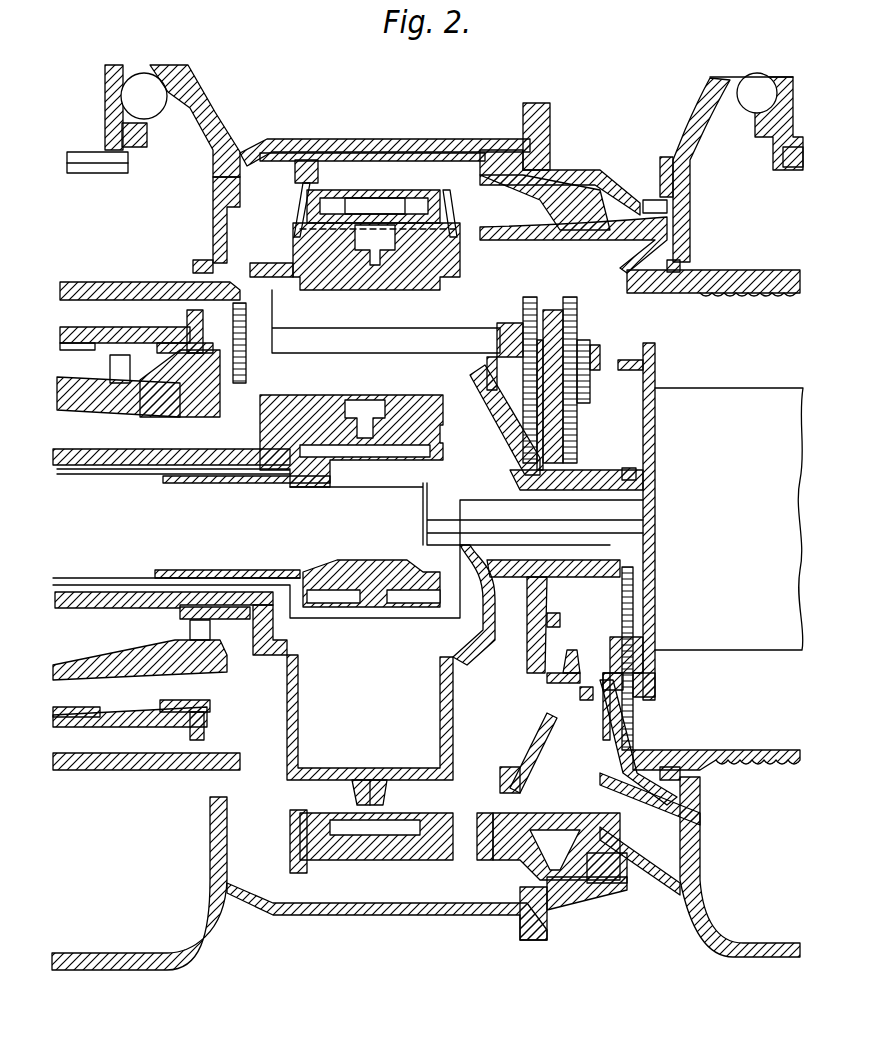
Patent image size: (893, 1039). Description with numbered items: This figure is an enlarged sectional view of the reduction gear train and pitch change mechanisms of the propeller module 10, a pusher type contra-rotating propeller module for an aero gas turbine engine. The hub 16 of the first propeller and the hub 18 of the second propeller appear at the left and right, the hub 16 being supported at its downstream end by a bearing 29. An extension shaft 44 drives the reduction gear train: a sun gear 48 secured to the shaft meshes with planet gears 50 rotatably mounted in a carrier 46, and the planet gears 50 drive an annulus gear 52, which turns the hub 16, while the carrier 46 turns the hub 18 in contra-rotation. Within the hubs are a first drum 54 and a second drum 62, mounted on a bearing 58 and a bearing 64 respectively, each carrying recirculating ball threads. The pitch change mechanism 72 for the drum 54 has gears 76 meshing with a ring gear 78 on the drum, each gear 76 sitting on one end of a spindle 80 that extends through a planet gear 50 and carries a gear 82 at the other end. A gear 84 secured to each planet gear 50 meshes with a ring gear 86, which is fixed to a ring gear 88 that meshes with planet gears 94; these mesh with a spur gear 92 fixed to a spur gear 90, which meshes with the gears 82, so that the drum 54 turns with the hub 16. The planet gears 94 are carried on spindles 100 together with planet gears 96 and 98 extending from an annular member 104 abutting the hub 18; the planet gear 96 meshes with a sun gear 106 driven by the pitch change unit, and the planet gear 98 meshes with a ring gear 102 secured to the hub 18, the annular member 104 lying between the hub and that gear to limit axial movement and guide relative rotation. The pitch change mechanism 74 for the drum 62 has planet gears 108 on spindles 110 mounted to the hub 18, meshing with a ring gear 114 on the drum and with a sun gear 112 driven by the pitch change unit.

The propeller module 10 is at (740, 468).
The hub 16 is at (203, 121).
The hub 18 is at (700, 96).
The bearing 29 is at (187, 362).
The extension shaft 44 is at (205, 482).
The carrier 46 is at (95, 453).
The sun gear 48 is at (348, 600).
The planet gears 50 is at (327, 440).
The annulus gear 52 is at (365, 212).
The first drum 54 is at (100, 282).
The bearing 58 is at (203, 260).
The second drum 62 is at (752, 275).
The bearing 64 is at (683, 270).
The pitch change mechanism 72 is at (596, 416).
The pitch change mechanism 74 is at (660, 718).
The gears 76 is at (246, 337).
The ring gear 78 is at (240, 740).
The spindle 80 is at (355, 343).
The gear 82 is at (523, 303).
The gear 84 is at (497, 437).
The ring gear 86 is at (510, 767).
The ring gear 88 is at (552, 740).
The spur gear 90 is at (527, 673).
The spur gear 92 is at (560, 622).
The planet gears 94 is at (553, 315).
The planet gear 96 is at (577, 307).
The planet gear 98 is at (592, 403).
The spindles 100 is at (620, 353).
The ring gear 102 is at (587, 710).
The annular member 104 is at (567, 687).
The sun gear 106 is at (623, 553).
The planet gears 108 is at (632, 593).
The spindle 110 is at (640, 650).
The sun gear 112 is at (637, 471).
The ring gear 114 is at (633, 741).